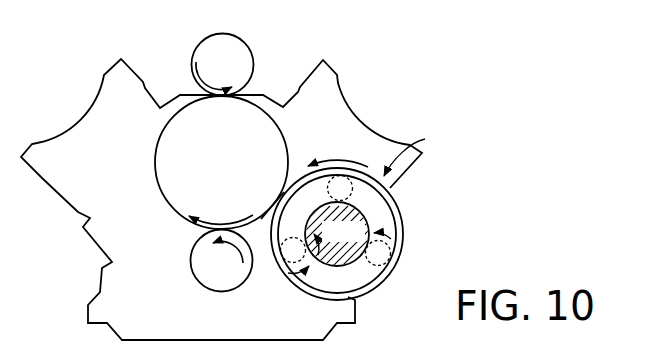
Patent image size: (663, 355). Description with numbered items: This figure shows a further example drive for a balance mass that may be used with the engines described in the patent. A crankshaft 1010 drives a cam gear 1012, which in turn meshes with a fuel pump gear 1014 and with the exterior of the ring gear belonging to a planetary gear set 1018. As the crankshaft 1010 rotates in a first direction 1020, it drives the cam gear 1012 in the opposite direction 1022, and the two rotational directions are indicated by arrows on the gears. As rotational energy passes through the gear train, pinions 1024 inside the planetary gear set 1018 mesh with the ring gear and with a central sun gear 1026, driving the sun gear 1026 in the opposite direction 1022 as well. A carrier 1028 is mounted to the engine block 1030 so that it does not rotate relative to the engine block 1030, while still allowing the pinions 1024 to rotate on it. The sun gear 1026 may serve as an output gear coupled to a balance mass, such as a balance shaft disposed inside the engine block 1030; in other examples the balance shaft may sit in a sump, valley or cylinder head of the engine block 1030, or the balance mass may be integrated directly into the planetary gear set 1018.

The crankshaft 1010 is at (237, 278).
The cam gear 1012 is at (240, 171).
The fuel pump gear 1014 is at (243, 68).
The planetary gear set 1018 is at (423, 150).
The first direction 1020 is at (196, 66).
The opposite direction 1022 is at (229, 206).
The pinions 1024 is at (379, 266).
The sun gear 1026 is at (362, 241).
The carrier 1028 is at (397, 218).
The engine block 1030 is at (168, 332).